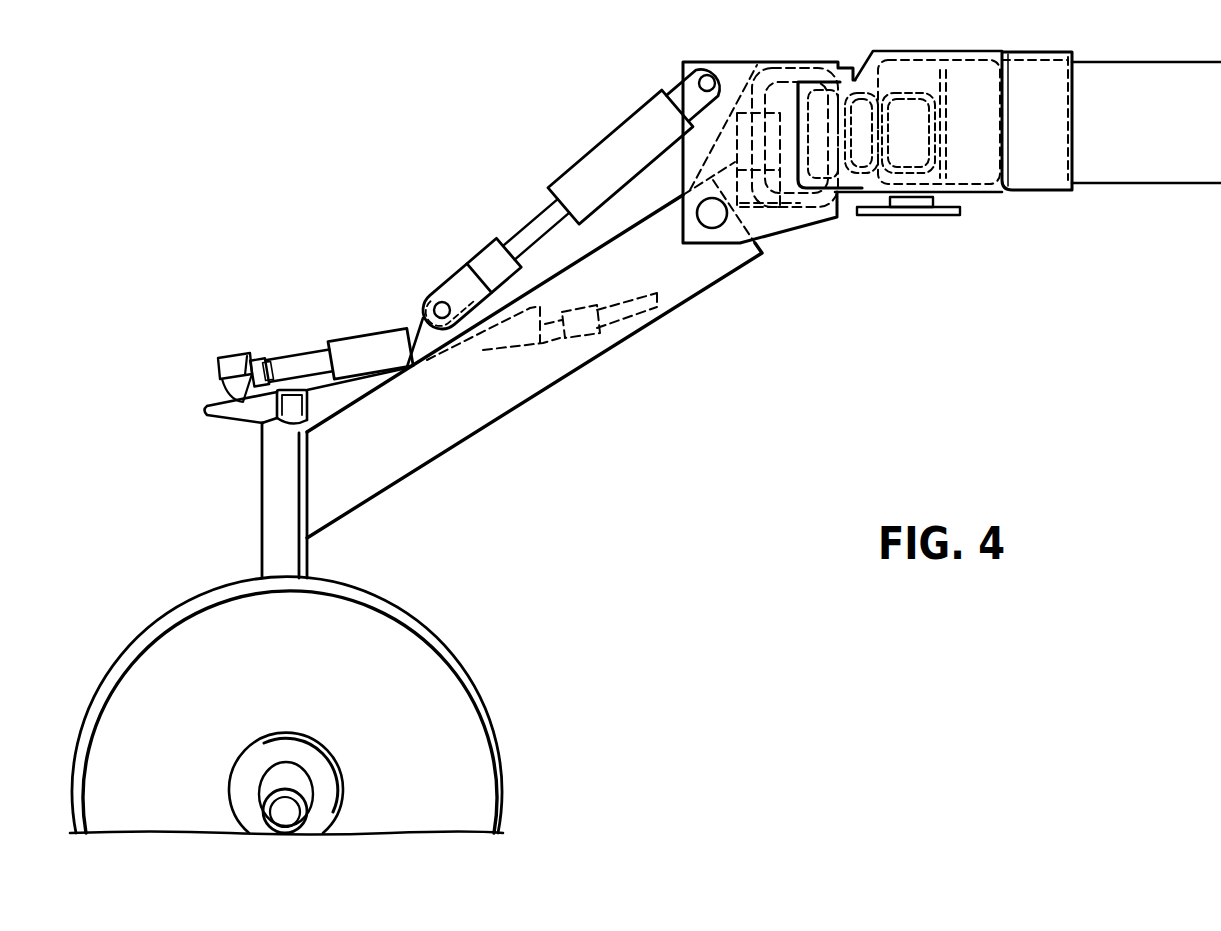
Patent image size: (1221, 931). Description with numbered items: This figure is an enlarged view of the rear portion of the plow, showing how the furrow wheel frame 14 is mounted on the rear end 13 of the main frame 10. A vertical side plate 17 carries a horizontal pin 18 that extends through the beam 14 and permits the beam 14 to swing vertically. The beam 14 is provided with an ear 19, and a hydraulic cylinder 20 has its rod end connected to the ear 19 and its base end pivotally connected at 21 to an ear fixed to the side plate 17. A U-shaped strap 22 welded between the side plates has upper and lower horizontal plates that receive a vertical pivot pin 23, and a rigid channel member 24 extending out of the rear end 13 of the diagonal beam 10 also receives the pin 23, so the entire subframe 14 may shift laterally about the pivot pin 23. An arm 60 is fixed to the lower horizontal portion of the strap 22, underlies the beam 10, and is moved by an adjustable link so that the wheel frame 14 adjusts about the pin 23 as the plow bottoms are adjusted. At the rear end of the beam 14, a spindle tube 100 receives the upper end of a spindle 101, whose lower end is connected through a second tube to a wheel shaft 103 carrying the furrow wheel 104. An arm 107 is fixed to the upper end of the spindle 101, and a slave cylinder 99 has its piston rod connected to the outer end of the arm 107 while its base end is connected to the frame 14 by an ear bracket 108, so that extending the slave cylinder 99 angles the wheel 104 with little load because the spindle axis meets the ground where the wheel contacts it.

The frame 10 is at (1130, 170).
The rear end 13 is at (1037, 77).
The furrow wheel frame 14 is at (527, 402).
The side plate 17 is at (787, 220).
The horizontal pin 18 is at (712, 215).
The ear 19 is at (428, 340).
The hydraulic cylinder 20 is at (588, 168).
The pivot connection 21 is at (707, 75).
The U-shaped strap 22 is at (775, 72).
The pivot pin 23 is at (840, 197).
The rigid channel member 24 is at (917, 48).
The arm 60 is at (952, 217).
The slave cylinder 99 is at (373, 340).
The spindle tube 100 is at (273, 523).
The spindle 101 is at (293, 407).
The wheel shaft 103 is at (290, 810).
The furrow wheel 104 is at (485, 713).
The arm 107 is at (232, 413).
The ear bracket 108 is at (630, 300).